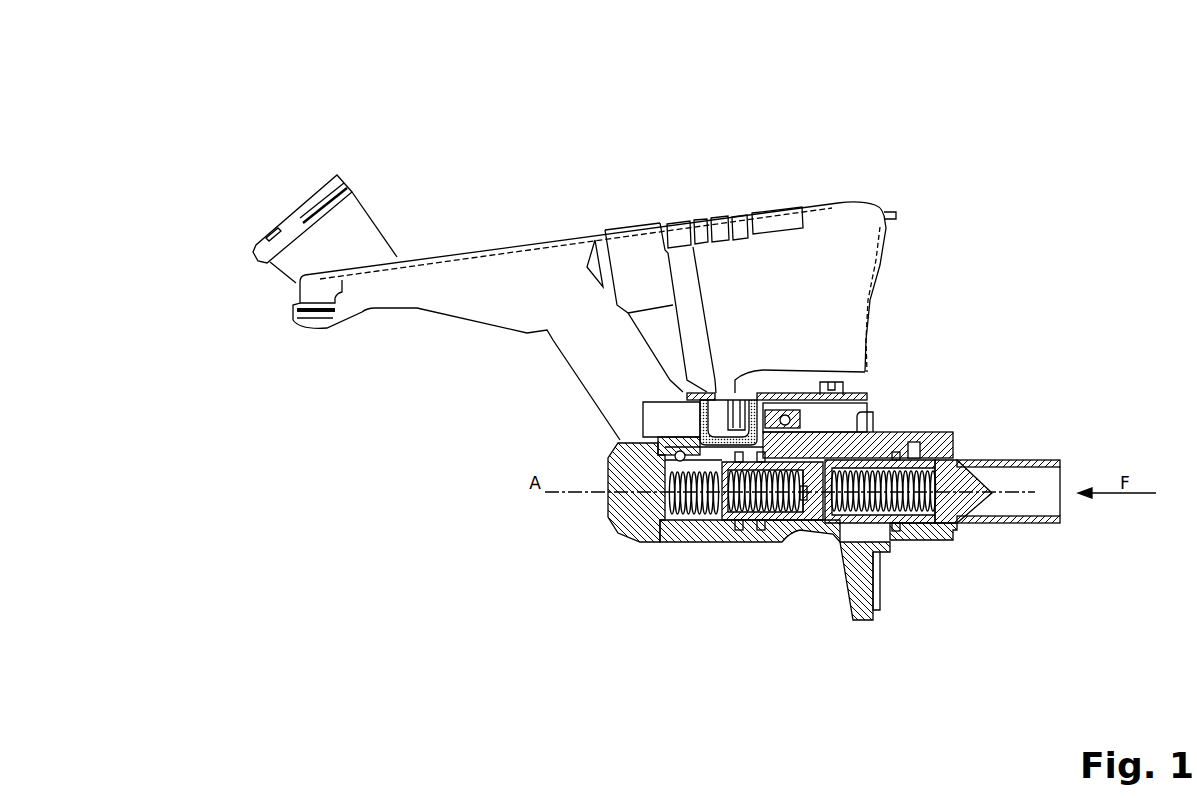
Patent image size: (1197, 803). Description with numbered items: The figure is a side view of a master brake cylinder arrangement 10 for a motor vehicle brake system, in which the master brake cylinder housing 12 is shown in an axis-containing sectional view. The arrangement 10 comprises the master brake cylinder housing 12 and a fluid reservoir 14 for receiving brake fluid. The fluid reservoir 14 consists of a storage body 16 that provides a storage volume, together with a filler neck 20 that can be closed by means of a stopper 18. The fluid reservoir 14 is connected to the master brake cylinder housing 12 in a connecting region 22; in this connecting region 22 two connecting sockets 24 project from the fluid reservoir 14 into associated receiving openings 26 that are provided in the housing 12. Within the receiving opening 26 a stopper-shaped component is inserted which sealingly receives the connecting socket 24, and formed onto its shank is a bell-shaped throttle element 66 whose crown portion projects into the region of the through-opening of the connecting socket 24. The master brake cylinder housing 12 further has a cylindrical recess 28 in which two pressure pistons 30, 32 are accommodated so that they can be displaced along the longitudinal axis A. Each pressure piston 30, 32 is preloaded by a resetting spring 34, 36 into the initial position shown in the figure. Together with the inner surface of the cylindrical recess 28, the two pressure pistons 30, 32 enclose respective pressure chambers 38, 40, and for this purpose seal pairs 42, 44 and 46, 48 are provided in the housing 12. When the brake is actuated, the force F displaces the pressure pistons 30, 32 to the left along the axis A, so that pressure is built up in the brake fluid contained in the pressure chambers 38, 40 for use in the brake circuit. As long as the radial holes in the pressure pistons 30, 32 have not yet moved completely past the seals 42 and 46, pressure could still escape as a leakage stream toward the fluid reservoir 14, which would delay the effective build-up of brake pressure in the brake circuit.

The master brake cylinder arrangement 10 is at (1008, 160).
The master brake cylinder housing 12 is at (637, 545).
The fluid reservoir 14 is at (842, 203).
The storage body 16 is at (848, 287).
The stopper 18 is at (306, 192).
The filler neck 20 is at (375, 212).
The connecting region 22 is at (872, 413).
The connecting socket 24 is at (863, 370).
The receiving opening 26 is at (695, 423).
The cylindrical recess 28 is at (870, 570).
The pressure piston 30 is at (802, 522).
The pressure piston 32 is at (1008, 523).
The resetting spring 34 is at (707, 522).
The resetting spring 36 is at (918, 522).
The pressure chamber 38 is at (678, 522).
The pressure chamber 40 is at (838, 560).
The seal 42 is at (737, 522).
The seal 44 is at (763, 522).
The seal 46 is at (892, 540).
The seal 48 is at (947, 540).
The bell-shaped throttle element 66 is at (733, 400).